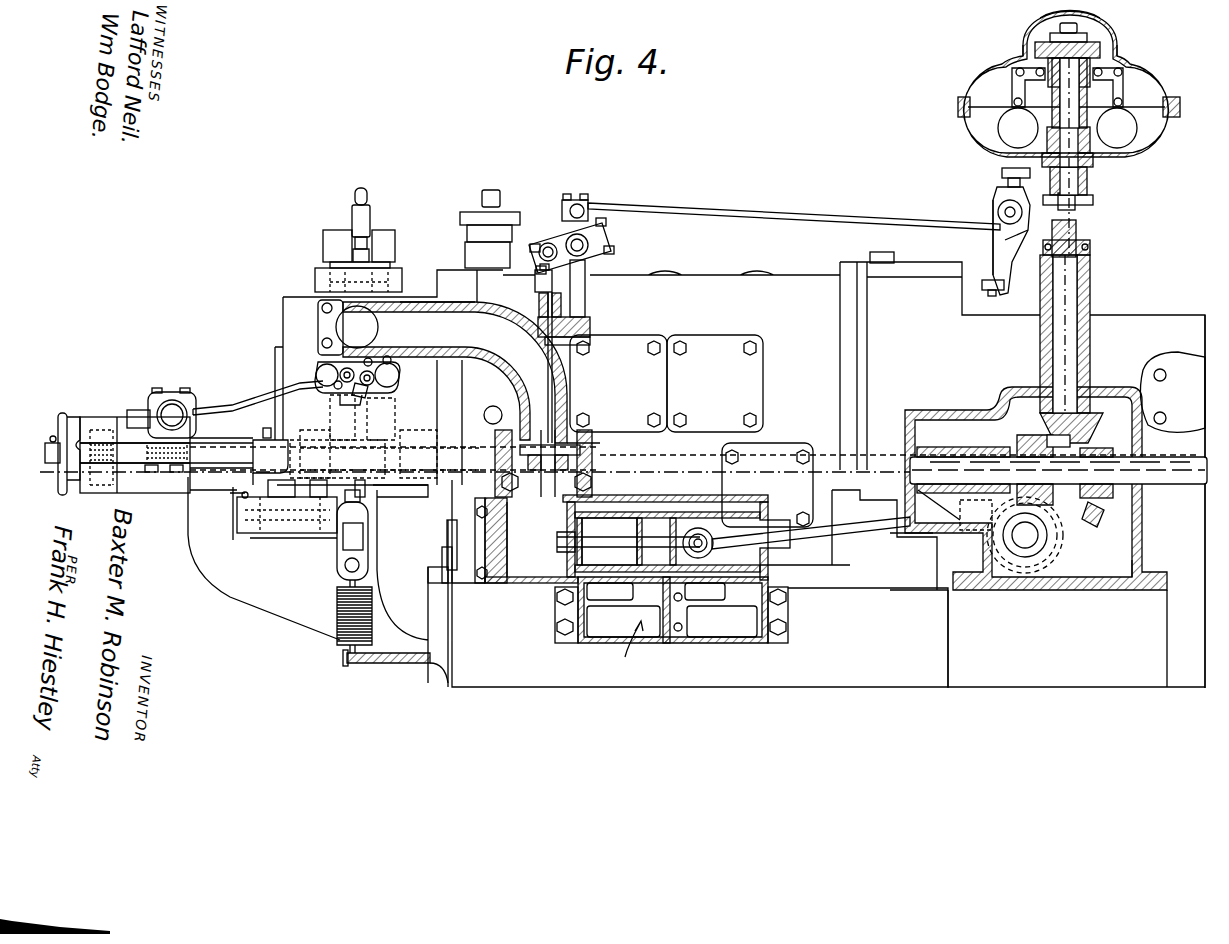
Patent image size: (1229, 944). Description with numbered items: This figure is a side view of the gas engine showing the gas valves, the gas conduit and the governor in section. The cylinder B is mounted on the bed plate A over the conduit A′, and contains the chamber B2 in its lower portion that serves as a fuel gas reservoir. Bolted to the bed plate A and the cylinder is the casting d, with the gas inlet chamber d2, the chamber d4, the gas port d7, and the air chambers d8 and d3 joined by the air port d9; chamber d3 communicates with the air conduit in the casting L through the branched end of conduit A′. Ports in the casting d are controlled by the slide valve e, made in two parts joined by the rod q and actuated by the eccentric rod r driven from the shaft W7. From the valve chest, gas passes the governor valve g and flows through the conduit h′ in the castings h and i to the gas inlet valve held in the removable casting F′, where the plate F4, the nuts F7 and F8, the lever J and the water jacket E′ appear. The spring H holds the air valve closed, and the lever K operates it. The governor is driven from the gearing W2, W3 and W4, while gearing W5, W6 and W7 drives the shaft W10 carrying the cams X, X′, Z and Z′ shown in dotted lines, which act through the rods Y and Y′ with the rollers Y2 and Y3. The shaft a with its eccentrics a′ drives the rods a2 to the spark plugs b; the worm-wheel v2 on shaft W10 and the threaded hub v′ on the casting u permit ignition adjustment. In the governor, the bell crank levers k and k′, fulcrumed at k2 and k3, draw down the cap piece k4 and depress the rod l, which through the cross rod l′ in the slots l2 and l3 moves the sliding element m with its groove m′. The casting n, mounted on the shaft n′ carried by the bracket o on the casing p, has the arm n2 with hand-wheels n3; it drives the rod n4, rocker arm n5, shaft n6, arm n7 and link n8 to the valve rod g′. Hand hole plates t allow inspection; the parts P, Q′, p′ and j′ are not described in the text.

The cylinder B is at (740, 470).
The lever K is at (857, 276).
The internally threaded hub v′ is at (62, 418).
The worm-wheel v2 is at (166, 472).
The shaft a is at (158, 405).
The eccentrics a′ is at (172, 400).
The rods a2 is at (222, 402).
The cam X is at (270, 471).
The cam X′ is at (312, 430).
The cam Z is at (337, 442).
The cam Z′ is at (392, 436).
The water jacket E′ is at (394, 419).
The shaft W10 is at (440, 460).
The casting u is at (264, 558).
The rod Y is at (322, 328).
The rod Y′ is at (372, 342).
The casting h is at (488, 305).
The conduit h′ is at (436, 381).
The casting i is at (412, 303).
The roller Y2 is at (345, 396).
The spark plug b is at (362, 390).
The roller Y3 is at (386, 406).
The removable casting F′ is at (318, 277).
The plate F4 is at (345, 251).
The nut F8 is at (375, 248).
The nut F7 is at (372, 259).
The lever J is at (369, 223).
The rocker arm n5 is at (584, 204).
The rod n4 is at (830, 224).
The arm n7 is at (556, 247).
The shaft n6 is at (589, 247).
The link n8 is at (535, 284).
The valve rod g′ is at (568, 386).
The governor valve g is at (581, 451).
The chamber B2 is at (611, 462).
The hand hole plates t is at (816, 459).
The housing Q′ is at (1171, 501).
The casting d is at (578, 620).
The slide valve e is at (567, 560).
The chamber d4 is at (522, 539).
The rod q is at (653, 547).
The gas port d7 is at (590, 510).
The chamber d2 is at (622, 512).
The air port d9 is at (690, 512).
The chamber d3 is at (623, 621).
The chamber d8 is at (722, 621).
The conduit A′ is at (660, 648).
The eccentric rod r is at (805, 542).
The block P is at (854, 589).
The bed plate A is at (774, 588).
The casting L is at (400, 535).
The spring H is at (338, 613).
The casing p is at (1003, 391).
The housing wall p′ is at (1135, 560).
The gearing W2 is at (1163, 485).
The gearing W5 is at (1018, 447).
The gearing W3 is at (1094, 514).
The gear W4 is at (1085, 422).
The gearing W6 is at (1042, 537).
The shaft W7 is at (1032, 540).
The column j′ is at (1090, 275).
The annular groove m′ is at (1093, 229).
The cylindrical sliding element m is at (1098, 198).
The cross rod l′ is at (1093, 204).
The slot l2 is at (1080, 186).
The slot l3 is at (1050, 180).
The rod l is at (1070, 120).
The bell crank lever k is at (1012, 87).
The bell crank lever k′ is at (1124, 88).
The fulcrum k2 is at (1013, 66).
The fulcrum k3 is at (1126, 70).
The cap piece k4 is at (1117, 46).
The bracket o is at (1011, 241).
The casting n is at (995, 201).
The shaft n′ is at (998, 213).
The arm n2 is at (992, 249).
The hand-wheels n3 is at (1003, 173).